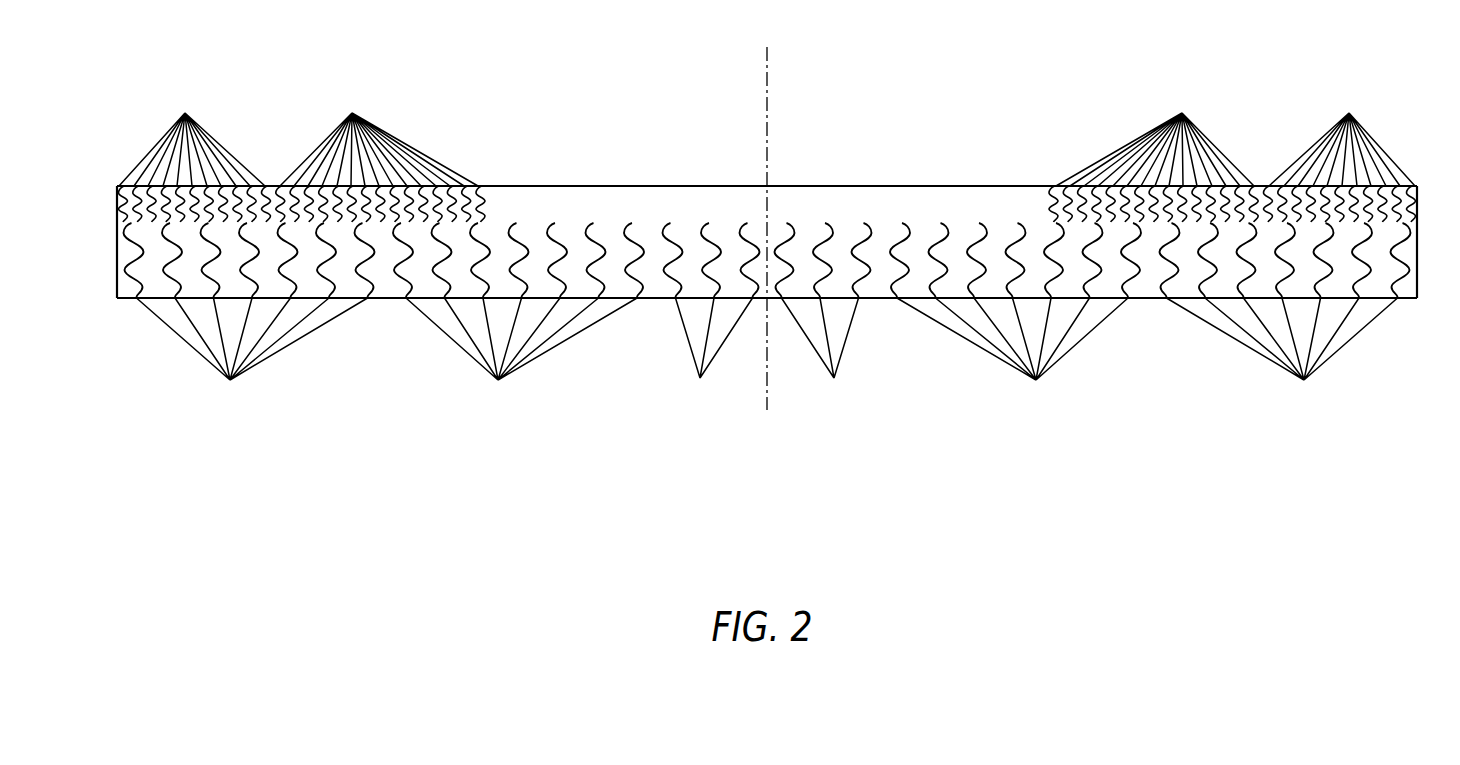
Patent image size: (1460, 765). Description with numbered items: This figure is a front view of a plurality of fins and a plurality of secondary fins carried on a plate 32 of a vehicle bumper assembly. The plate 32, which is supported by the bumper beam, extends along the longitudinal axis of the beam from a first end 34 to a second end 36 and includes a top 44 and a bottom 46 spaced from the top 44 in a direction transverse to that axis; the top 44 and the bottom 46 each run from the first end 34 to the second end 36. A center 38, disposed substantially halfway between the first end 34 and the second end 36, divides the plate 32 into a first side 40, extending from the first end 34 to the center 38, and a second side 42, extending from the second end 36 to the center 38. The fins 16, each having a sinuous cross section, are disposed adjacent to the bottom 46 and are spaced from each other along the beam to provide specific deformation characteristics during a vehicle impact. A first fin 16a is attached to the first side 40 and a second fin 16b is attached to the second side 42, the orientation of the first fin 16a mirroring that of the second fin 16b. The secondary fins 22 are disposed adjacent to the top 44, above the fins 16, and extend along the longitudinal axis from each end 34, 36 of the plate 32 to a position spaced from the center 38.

The fin 16 is at (767, 316).
The first fin 16a is at (700, 216).
The second fin 16b is at (834, 216).
The secondary fin 22 is at (767, 153).
The plate 32 is at (937, 181).
The first end 34 is at (117, 224).
The second end 36 is at (1417, 224).
The center 38 is at (771, 86).
The first side 40 is at (521, 114).
The second side 42 is at (1013, 113).
The top 44 is at (594, 186).
The bottom 46 is at (633, 300).